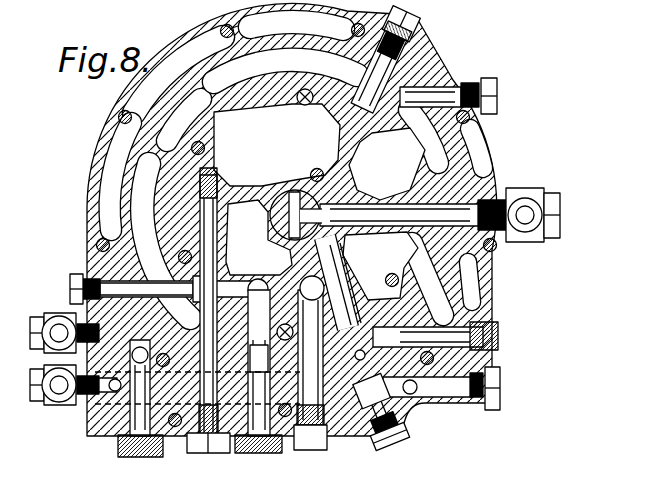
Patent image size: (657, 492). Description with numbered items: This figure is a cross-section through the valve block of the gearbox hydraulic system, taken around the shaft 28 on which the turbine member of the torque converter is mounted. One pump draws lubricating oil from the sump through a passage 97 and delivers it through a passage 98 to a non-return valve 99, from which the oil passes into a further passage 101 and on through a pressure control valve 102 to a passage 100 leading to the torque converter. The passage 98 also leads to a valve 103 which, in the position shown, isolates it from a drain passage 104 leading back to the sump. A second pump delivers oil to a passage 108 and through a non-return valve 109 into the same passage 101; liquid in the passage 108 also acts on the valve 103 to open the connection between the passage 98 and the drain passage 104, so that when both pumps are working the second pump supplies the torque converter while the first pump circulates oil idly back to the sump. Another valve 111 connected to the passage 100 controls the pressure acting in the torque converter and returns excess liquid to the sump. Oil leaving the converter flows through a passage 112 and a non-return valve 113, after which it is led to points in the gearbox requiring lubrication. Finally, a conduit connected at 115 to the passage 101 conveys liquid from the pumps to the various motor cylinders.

The shaft 28 is at (283, 196).
The passage 97 is at (318, 385).
The passage 98 is at (268, 292).
The non-return valve 99 is at (228, 437).
The passage 100 is at (342, 272).
The passage 101 is at (291, 425).
The pressure control valve 102 is at (358, 445).
The valve 103 is at (215, 290).
The drain passage 104 is at (226, 262).
The passage 108 is at (70, 300).
The non-return valve 109 is at (115, 437).
The valve 111 is at (440, 297).
The passage 112 is at (334, 139).
The non-return valve 113 is at (422, 66).
The connection 115 is at (90, 398).